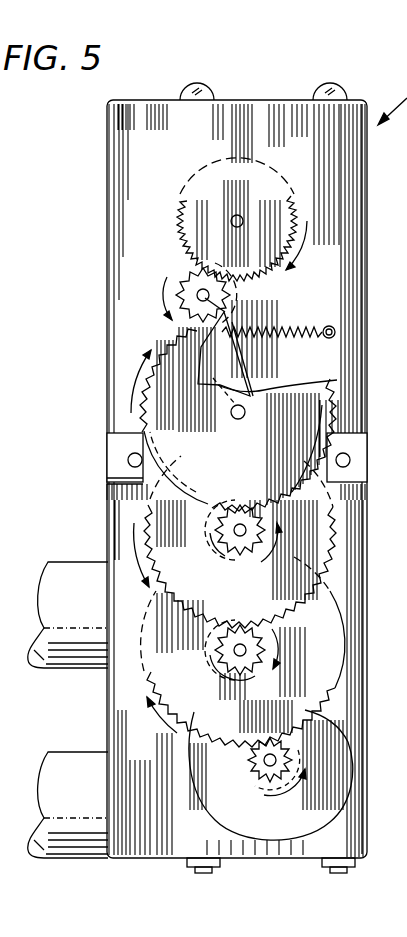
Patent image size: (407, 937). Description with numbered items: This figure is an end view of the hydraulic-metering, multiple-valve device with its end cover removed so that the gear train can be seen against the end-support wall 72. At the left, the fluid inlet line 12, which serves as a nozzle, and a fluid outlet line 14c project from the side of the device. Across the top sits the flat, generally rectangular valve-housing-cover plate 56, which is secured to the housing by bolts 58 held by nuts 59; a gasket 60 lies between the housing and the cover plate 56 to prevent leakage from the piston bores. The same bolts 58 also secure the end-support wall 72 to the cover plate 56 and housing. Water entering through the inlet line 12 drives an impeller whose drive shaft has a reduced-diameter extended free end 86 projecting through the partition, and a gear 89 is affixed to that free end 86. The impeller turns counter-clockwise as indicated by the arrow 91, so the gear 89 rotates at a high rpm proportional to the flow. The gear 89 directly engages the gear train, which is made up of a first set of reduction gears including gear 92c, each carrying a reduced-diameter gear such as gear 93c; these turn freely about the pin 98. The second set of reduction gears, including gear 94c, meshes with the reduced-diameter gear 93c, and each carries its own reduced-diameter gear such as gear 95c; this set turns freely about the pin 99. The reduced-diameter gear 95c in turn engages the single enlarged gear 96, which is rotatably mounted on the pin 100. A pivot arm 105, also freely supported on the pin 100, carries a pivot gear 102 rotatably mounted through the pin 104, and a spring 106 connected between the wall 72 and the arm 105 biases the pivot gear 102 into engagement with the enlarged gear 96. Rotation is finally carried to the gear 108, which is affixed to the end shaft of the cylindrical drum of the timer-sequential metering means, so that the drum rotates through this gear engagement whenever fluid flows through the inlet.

The fluid inlet line 12 is at (57, 773).
The fluid outlet line 14c is at (53, 568).
The valve-housing-cover plate 56 is at (118, 457).
The bolts 58 is at (200, 93).
The nuts 59 is at (322, 863).
The gasket 60 is at (110, 480).
The end-support wall 72 is at (127, 167).
The extended free end of drive shaft 86 is at (261, 773).
The gear 89 is at (274, 772).
The arrow 91 is at (284, 794).
The first reduction gear 92c is at (284, 721).
The reduced-diameter gear 93c is at (243, 674).
The second reduction gear 94c is at (250, 603).
The reduced-diameter gear 95c is at (226, 548).
The enlarged gear 96 is at (215, 471).
The pin 98 is at (236, 652).
The pin 99 is at (233, 531).
The pin 100 is at (229, 414).
The pivot gear 102 is at (215, 301).
The pin 104 is at (242, 219).
The pivot arm 105 is at (230, 367).
The spring 106 is at (308, 328).
The gear 108 is at (179, 211).